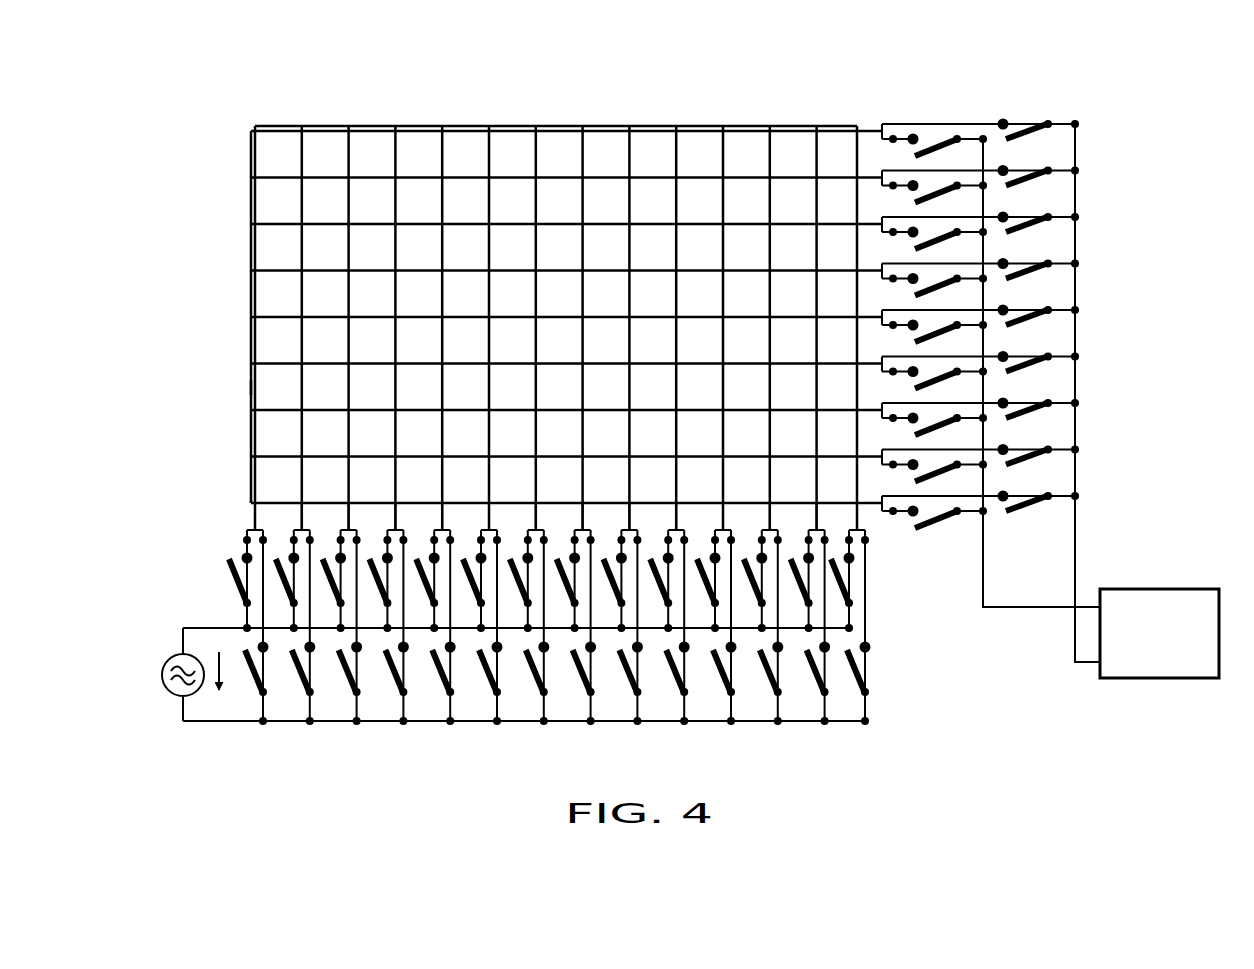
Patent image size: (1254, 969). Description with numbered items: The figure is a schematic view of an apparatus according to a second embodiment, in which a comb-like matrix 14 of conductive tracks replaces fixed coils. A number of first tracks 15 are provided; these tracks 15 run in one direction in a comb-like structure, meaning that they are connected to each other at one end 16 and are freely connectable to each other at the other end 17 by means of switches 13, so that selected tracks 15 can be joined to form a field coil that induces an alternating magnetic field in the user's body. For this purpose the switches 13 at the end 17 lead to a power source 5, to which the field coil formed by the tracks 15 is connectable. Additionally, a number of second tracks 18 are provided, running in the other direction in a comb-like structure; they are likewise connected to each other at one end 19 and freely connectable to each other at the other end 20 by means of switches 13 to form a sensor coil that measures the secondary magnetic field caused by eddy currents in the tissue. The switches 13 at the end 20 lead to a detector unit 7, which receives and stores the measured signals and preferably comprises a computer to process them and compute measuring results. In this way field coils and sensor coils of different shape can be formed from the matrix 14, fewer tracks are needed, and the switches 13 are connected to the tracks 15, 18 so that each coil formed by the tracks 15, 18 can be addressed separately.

The power source 5 is at (162, 675).
The detector unit 7 is at (1158, 589).
The switches 13 is at (930, 137).
The comb-like matrix 14 is at (612, 112).
The first tracks 15 is at (253, 203).
The one end of the first tracks 16 is at (278, 118).
The other end of the first tracks 17 is at (242, 517).
The second tracks 18 is at (419, 131).
The one end of the second tracks 19 is at (242, 387).
The other end of the second tracks 20 is at (870, 118).